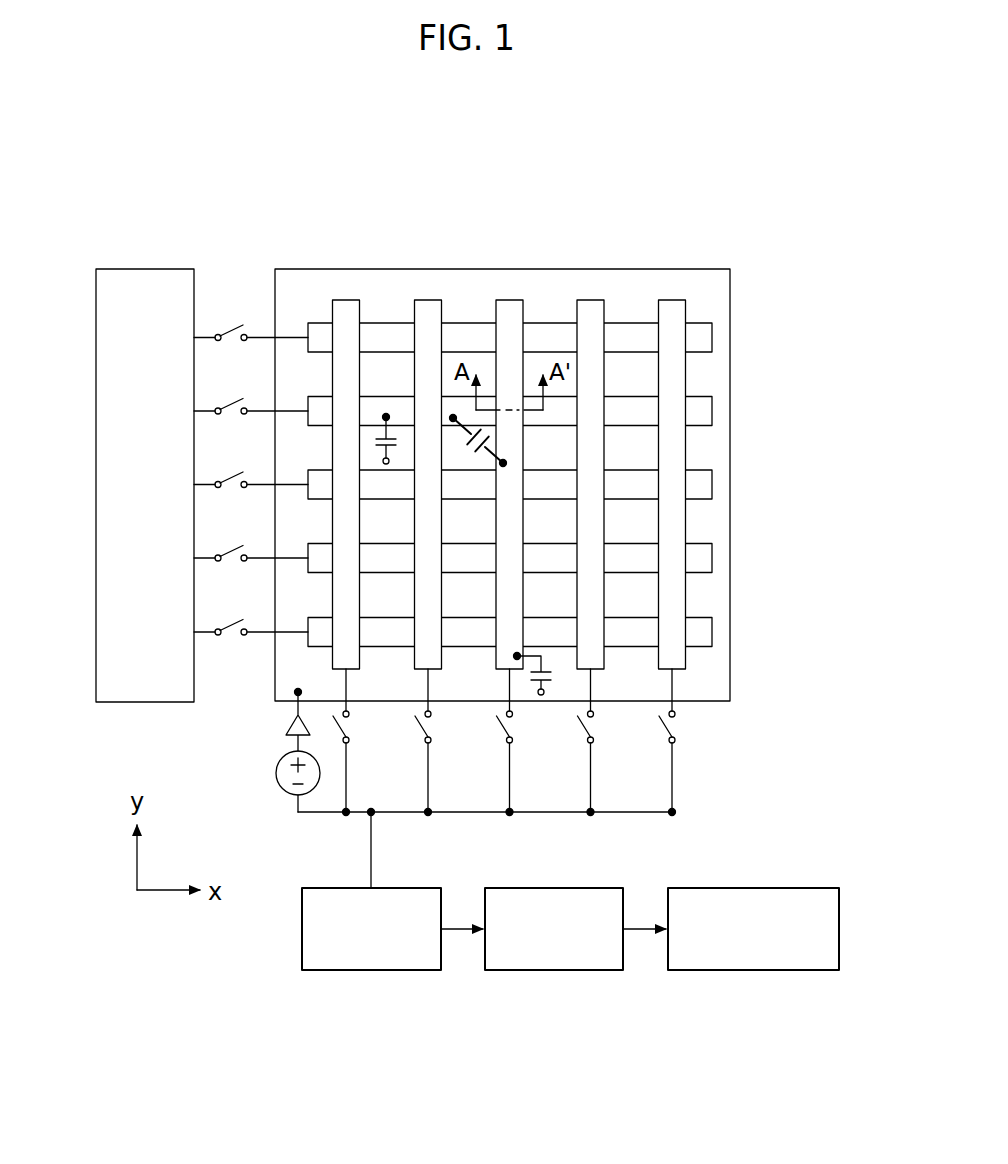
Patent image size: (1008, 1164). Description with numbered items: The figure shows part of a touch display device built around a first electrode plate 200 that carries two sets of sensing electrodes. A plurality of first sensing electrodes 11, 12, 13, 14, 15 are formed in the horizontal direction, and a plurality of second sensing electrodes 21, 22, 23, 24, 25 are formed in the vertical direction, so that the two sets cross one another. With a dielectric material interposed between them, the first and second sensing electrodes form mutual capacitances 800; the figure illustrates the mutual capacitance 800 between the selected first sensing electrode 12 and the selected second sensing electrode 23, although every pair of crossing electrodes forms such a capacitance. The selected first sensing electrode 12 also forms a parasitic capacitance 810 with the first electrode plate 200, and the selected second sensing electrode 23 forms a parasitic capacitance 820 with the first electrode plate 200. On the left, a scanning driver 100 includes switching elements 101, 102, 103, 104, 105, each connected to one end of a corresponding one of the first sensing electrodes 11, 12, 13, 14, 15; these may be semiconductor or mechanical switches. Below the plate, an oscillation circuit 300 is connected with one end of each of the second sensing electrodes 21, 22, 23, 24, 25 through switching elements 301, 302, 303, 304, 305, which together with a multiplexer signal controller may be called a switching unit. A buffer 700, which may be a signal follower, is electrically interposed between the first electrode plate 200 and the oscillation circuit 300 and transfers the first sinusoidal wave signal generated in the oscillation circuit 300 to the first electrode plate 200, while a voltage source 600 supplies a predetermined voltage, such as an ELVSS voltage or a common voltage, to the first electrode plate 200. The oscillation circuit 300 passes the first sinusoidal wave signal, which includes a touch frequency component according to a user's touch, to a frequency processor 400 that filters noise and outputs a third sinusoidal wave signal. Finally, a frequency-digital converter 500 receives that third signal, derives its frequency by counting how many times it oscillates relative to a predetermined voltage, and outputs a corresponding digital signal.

The scanning driver 100 is at (178, 269).
The switching element 101 is at (231, 330).
The switching element 102 is at (231, 404).
The switching element 103 is at (231, 477).
The switching element 104 is at (231, 551).
The switching element 105 is at (231, 625).
The first electrode plate 200 is at (730, 283).
The first sensing electrode 11 is at (712, 338).
The first sensing electrode 12 is at (712, 411).
The first sensing electrode 13 is at (712, 485).
The first sensing electrode 14 is at (712, 558).
The first sensing electrode 15 is at (712, 632).
The second sensing electrode 21 is at (350, 300).
The second sensing electrode 22 is at (430, 300).
The second sensing electrode 23 is at (512, 300).
The second sensing electrode 24 is at (592, 300).
The second sensing electrode 25 is at (674, 300).
The mutual capacitance 800 is at (489, 443).
The parasitic capacitance 810 is at (378, 437).
The parasitic capacitance 820 is at (551, 683).
The switching element 301 is at (352, 728).
The switching element 302 is at (434, 728).
The switching element 303 is at (516, 728).
The switching element 304 is at (596, 728).
The switching element 305 is at (678, 728).
The oscillation circuit 300 is at (420, 888).
The frequency processor 400 is at (603, 888).
The frequency-digital converter 500 is at (788, 888).
The voltage source 600 is at (276, 773).
The buffer 700 is at (286, 723).